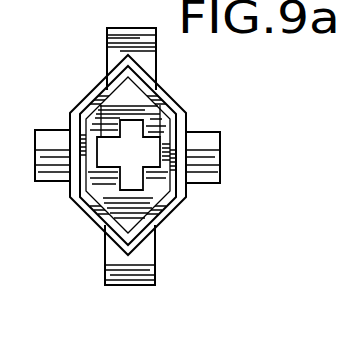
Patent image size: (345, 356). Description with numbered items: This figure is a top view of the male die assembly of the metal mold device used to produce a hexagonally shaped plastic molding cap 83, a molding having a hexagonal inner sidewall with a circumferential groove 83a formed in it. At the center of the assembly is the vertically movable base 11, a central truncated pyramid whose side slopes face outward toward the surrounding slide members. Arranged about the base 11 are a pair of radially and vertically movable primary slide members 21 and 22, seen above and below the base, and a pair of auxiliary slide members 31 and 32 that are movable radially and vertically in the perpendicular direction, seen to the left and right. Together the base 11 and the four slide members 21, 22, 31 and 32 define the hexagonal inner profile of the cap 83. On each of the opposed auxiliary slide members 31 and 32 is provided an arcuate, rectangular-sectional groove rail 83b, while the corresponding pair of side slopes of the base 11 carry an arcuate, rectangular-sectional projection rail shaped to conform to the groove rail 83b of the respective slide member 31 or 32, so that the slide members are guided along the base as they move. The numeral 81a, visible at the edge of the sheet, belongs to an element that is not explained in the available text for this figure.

The base 11 is at (176, 163).
The primary slide member 21 is at (160, 215).
The primary slide member 22 is at (118, 106).
The auxiliary slide member 31 is at (97, 188).
The auxiliary slide member 32 is at (173, 200).
The plastic molding cap 83 is at (166, 96).
The circumferential groove 83a is at (175, 150).
The groove rail 83b is at (98, 157).
The guide element 81a is at (64, 6).